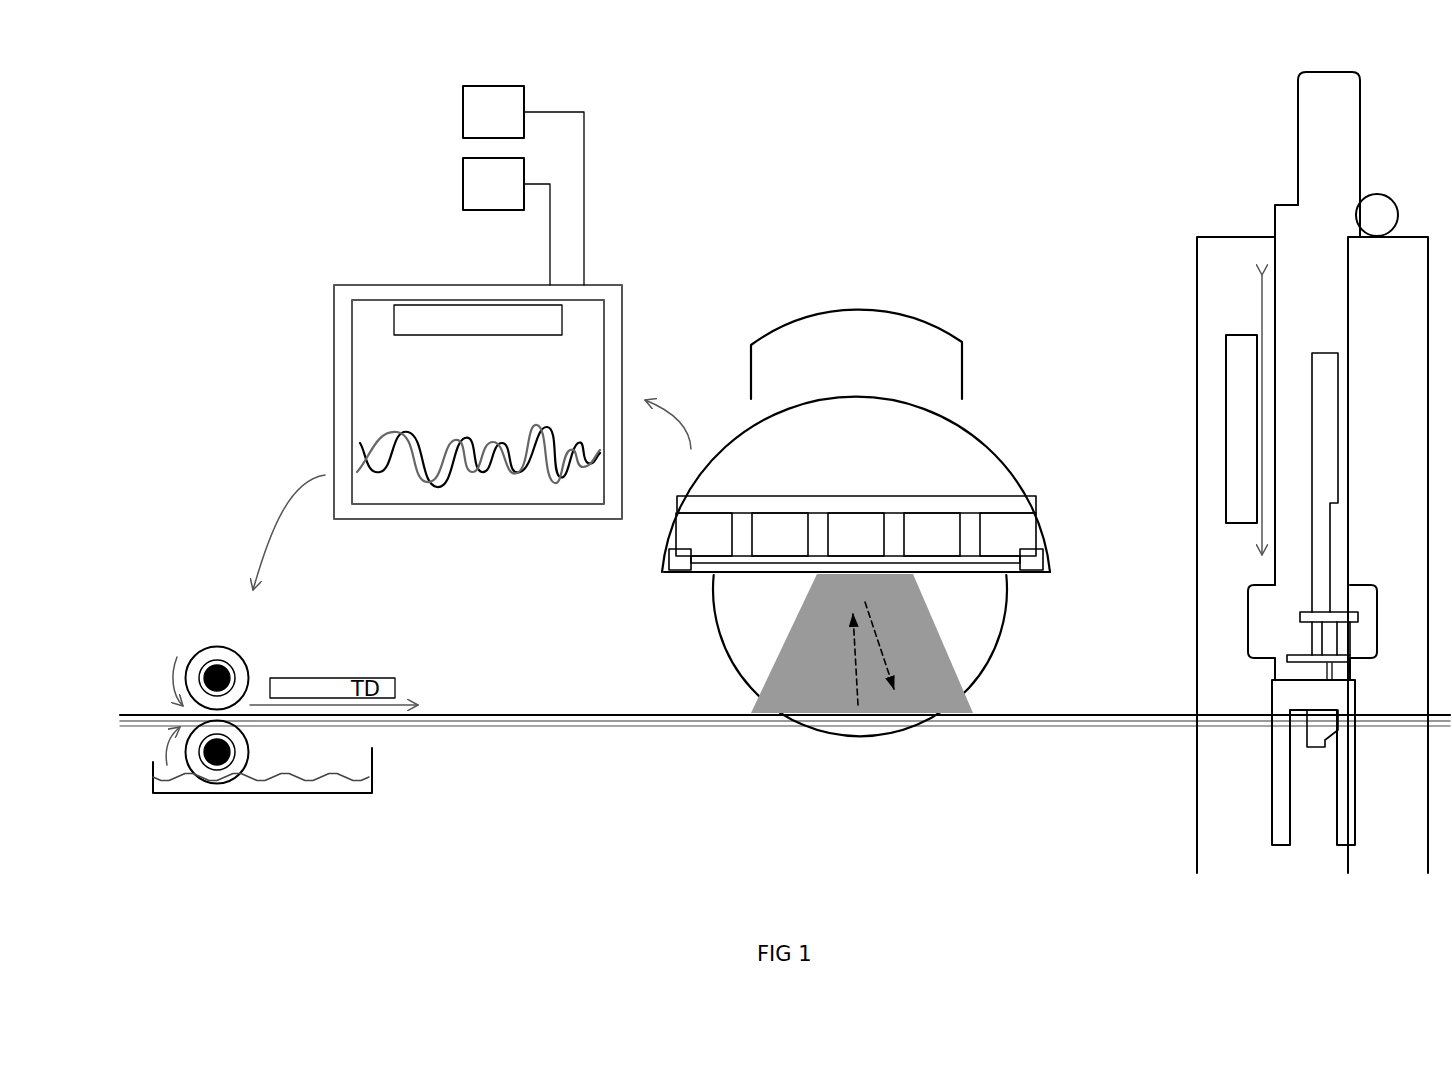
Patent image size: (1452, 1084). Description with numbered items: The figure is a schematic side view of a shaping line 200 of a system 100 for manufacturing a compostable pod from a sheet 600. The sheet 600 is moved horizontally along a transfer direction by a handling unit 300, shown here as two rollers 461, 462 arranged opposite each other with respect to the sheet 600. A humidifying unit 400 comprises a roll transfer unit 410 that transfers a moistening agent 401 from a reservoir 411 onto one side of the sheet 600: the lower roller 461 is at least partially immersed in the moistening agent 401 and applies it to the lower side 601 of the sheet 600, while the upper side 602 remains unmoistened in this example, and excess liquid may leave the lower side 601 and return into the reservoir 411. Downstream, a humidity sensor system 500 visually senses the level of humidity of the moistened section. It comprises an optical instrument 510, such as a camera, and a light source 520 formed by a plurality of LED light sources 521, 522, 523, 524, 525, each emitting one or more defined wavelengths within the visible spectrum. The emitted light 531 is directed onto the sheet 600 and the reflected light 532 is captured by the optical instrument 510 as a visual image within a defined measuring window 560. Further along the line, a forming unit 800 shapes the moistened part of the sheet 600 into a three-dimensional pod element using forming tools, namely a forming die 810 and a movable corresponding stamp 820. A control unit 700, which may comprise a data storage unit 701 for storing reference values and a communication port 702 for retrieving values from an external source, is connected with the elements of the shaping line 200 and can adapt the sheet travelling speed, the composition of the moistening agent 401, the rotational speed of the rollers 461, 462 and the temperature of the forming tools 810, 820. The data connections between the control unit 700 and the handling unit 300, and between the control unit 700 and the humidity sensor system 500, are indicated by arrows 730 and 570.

The system 100 is at (178, 95).
The shaping line 200 is at (232, 243).
The handling unit 300 is at (253, 680).
The humidifying unit 400 is at (261, 725).
The moistening agent 401 is at (280, 788).
The roll transfer unit 410 is at (226, 809).
The reservoir 411 is at (153, 787).
The roller 461 is at (240, 760).
The roller 462 is at (240, 675).
The humidity sensor system 500 is at (865, 463).
The optical instrument 510 is at (955, 330).
The light source 520 is at (856, 473).
The LED light source 521 is at (697, 529).
The LED light source 522 is at (768, 529).
The LED light source 523 is at (842, 529).
The LED light source 524 is at (913, 529).
The LED light source 525 is at (1011, 529).
The emitted light 531 is at (865, 602).
The reflected light 532 is at (850, 650).
The measuring window 560 is at (906, 631).
The arrow 570 is at (677, 417).
The sheet 600 is at (785, 721).
The lower side 601 is at (637, 727).
The upper side 602 is at (538, 712).
The control unit 700 is at (454, 292).
The data storage unit 701 is at (474, 101).
The communication port 702 is at (495, 194).
The arrow 730 is at (276, 532).
The forming unit 800 is at (1276, 472).
The forming die 810 is at (1267, 743).
The stamp 820 is at (1238, 622).